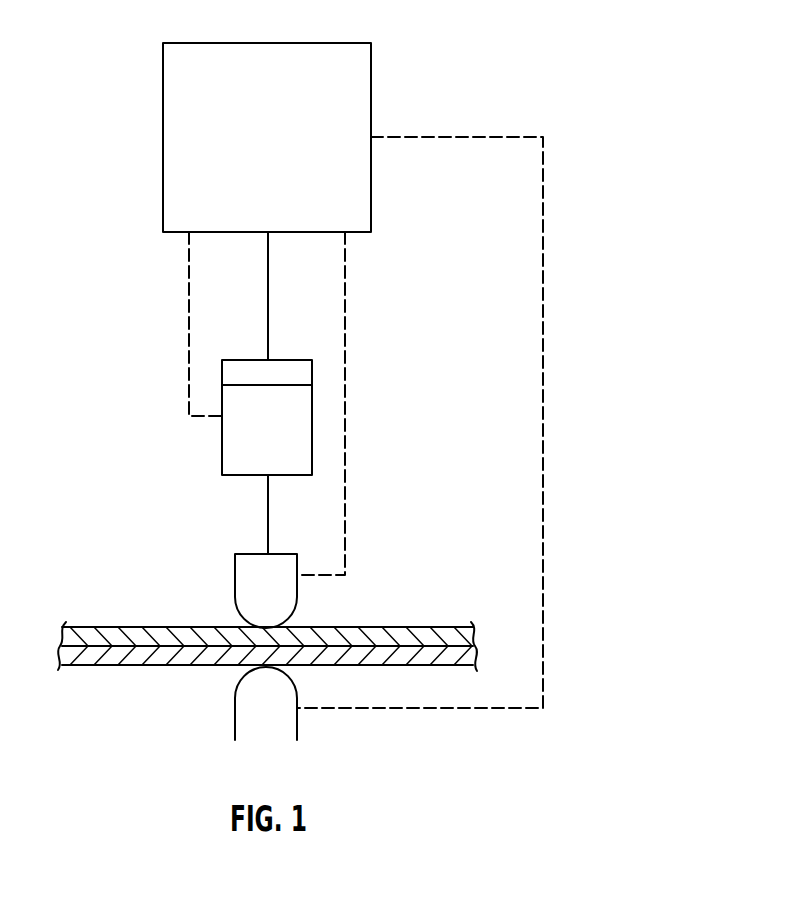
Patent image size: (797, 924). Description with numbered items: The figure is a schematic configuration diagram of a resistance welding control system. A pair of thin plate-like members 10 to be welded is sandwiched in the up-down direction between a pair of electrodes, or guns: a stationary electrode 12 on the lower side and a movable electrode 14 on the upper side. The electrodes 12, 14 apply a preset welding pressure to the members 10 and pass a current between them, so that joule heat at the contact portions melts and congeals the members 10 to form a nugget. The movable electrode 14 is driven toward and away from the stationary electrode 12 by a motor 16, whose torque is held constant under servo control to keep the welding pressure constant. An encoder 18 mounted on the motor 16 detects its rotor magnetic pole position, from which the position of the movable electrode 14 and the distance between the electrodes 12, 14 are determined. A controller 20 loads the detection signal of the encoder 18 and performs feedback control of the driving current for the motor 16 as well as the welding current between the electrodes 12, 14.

The members to be welded 10 is at (88, 625).
The stationary electrode 12 is at (235, 717).
The movable electrode 14 is at (235, 576).
The motor 16 is at (222, 432).
The encoder 18 is at (245, 359).
The controller 20 is at (371, 59).